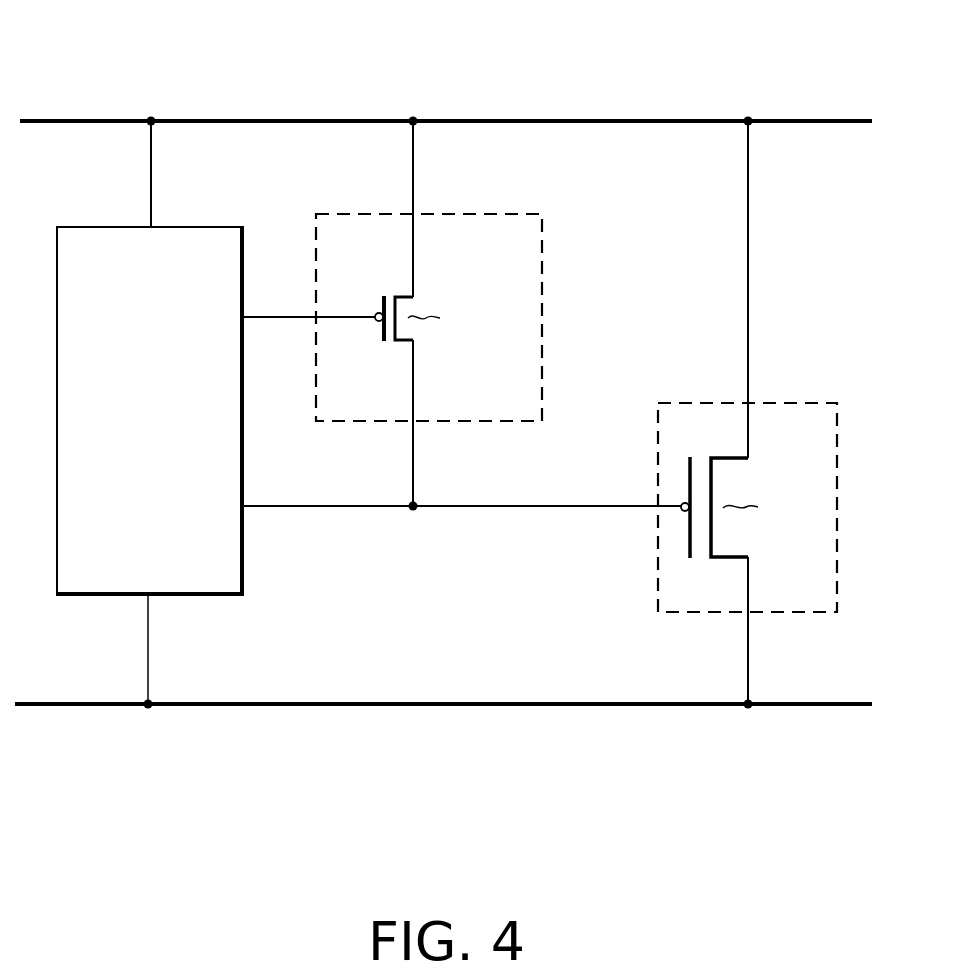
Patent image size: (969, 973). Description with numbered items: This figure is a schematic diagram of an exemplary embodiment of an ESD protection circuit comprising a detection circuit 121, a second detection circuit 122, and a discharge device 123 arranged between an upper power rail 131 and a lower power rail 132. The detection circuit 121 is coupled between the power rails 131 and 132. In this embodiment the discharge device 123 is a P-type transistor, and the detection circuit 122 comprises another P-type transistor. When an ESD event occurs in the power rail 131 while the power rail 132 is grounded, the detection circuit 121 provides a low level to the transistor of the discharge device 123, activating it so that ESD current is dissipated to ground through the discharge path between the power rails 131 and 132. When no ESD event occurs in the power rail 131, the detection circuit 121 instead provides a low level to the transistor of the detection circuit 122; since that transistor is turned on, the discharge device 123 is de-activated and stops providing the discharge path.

The power rail 131 is at (810, 119).
The power rail 132 is at (812, 707).
The detection circuit 121 is at (195, 597).
The detection circuit 122 is at (543, 270).
The discharge device 123 is at (808, 613).